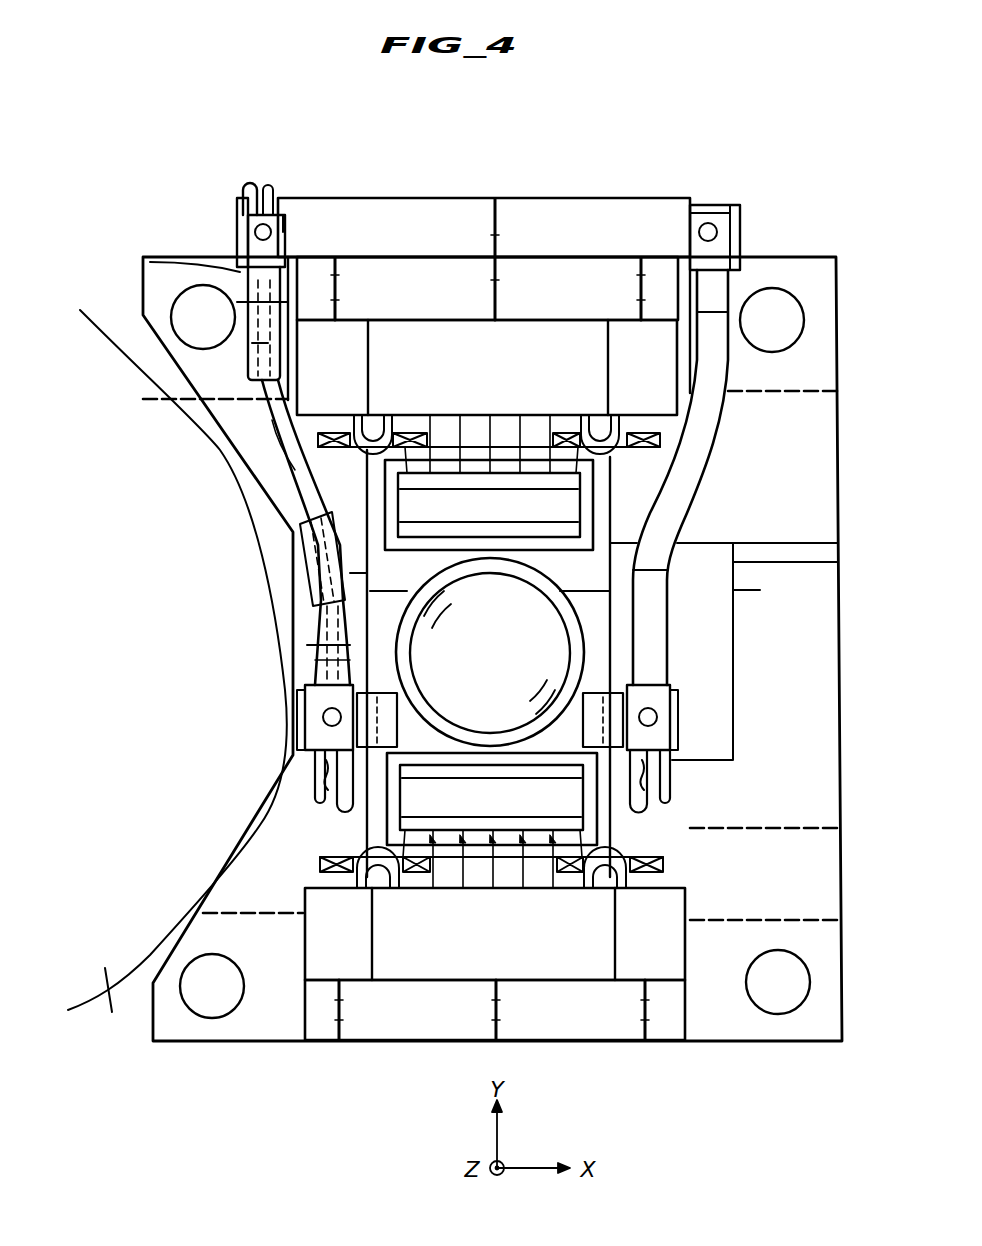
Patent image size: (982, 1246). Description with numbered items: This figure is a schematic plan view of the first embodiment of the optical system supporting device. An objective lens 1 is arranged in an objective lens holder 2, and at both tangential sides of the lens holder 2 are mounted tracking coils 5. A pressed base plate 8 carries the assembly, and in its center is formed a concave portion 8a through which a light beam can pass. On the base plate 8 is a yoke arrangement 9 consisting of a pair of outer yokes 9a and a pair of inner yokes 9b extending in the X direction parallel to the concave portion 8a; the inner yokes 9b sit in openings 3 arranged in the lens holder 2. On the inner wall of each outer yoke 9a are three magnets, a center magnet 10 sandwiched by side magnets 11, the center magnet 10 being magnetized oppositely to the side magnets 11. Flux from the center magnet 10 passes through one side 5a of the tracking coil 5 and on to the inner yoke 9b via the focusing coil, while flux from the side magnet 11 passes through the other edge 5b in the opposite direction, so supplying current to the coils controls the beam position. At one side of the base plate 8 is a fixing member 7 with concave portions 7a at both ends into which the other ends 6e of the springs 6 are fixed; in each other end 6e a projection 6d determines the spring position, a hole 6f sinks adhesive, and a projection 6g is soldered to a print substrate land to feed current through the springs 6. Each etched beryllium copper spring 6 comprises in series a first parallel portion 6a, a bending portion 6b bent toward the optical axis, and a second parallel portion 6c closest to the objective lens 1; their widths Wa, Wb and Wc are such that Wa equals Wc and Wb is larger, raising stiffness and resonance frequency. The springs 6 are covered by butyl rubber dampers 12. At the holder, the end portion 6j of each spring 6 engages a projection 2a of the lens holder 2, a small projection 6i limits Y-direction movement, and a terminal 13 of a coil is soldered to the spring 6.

The objective lens 1 is at (400, 630).
The objective lens holder 2 is at (367, 576).
The projection 2a is at (297, 746).
The openings 3 is at (367, 521).
The tracking coils 5 is at (360, 483).
The one side of the tracking coil 5a is at (420, 416).
The other edge of the tracking coil 5b is at (313, 318).
The springs 6 is at (255, 401).
The first parallel portion 6a is at (250, 301).
The bending portion 6b is at (275, 432).
The second parallel portion 6c is at (327, 637).
The projection 6d is at (245, 278).
The other end of the spring 6e is at (283, 216).
The hole 6f is at (268, 188).
The projection 6g is at (243, 192).
The small projection 6i is at (305, 696).
The end portion of the spring 6j is at (322, 764).
The fixing member 7 is at (457, 215).
The concave portions 7a is at (237, 236).
The base plate 8 is at (721, 1044).
The concave portion 8a is at (808, 720).
The upper yoke 9 is at (596, 252).
The outer yokes 9a is at (549, 266).
The inner yokes 9b is at (395, 505).
The center magnet 10 is at (407, 328).
The side magnets 11 is at (340, 318).
The dampers 12 is at (250, 362).
The terminal 13 is at (293, 776).
The width of the first parallel portion Wa is at (150, 262).
The width of the bending portion Wb is at (292, 470).
The width of the second parallel portion Wc is at (330, 670).